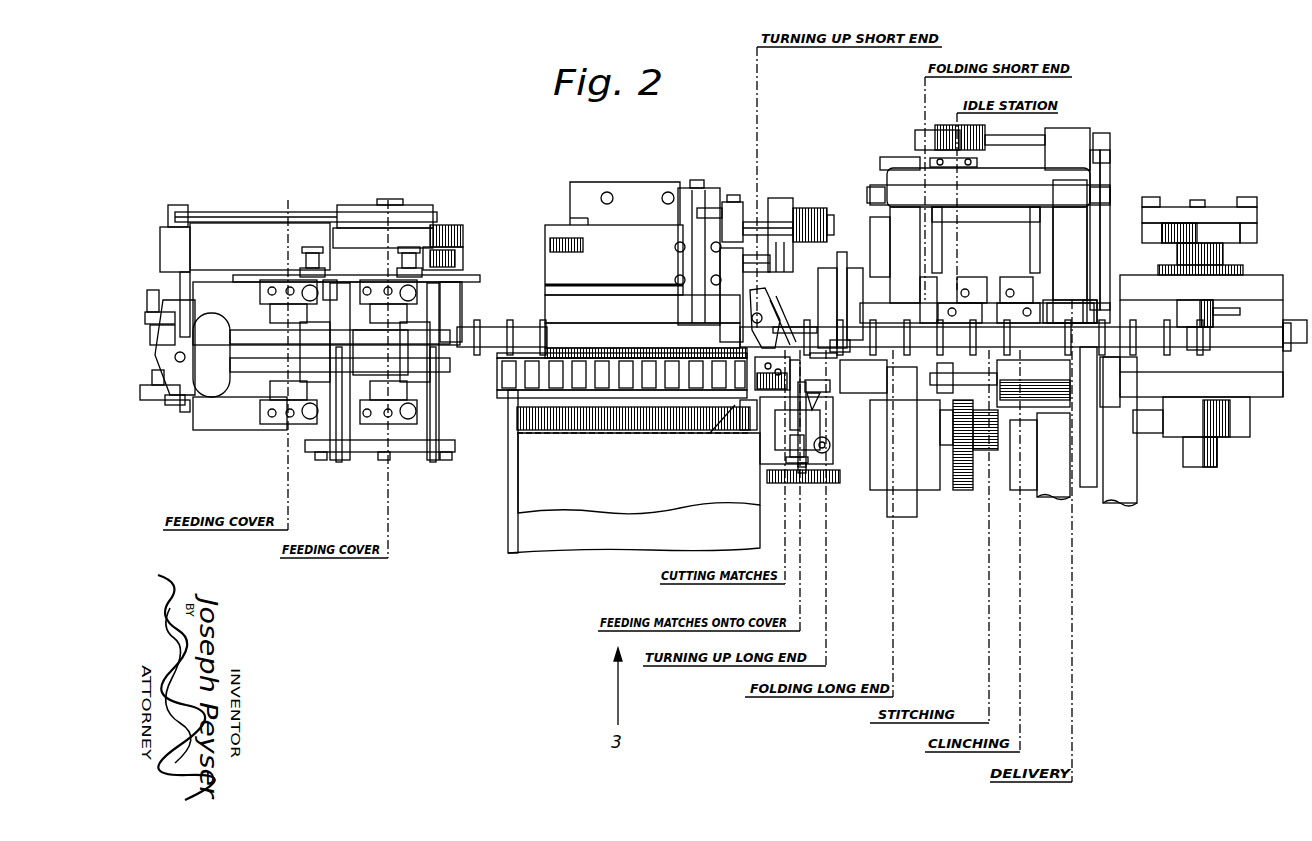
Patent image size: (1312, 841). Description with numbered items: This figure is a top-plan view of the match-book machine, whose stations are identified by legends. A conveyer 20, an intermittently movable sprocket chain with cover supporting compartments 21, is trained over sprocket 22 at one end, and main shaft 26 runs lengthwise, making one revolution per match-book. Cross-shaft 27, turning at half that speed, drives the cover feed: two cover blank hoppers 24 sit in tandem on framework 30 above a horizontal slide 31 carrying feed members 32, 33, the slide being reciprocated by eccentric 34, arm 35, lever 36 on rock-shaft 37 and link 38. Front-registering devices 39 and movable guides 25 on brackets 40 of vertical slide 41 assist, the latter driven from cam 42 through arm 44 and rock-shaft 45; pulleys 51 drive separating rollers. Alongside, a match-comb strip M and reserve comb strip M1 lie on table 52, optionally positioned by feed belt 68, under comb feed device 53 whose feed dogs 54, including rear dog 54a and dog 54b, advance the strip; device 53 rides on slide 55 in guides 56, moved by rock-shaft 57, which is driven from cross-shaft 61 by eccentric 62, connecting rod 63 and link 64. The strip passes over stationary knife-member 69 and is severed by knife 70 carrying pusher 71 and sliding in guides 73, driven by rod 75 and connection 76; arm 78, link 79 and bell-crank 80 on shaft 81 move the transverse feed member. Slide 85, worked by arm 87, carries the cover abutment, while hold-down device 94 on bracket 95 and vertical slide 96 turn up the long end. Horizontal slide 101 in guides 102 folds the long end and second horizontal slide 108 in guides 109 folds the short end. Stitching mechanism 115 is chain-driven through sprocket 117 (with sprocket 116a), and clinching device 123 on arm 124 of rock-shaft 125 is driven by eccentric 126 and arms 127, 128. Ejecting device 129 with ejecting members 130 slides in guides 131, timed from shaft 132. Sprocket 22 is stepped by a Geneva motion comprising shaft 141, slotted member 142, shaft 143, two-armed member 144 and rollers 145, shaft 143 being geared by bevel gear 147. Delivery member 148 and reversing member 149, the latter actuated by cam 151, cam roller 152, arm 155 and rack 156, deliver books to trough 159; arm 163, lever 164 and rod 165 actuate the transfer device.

The conveyer 20 is at (470, 362).
The cover supporting compartments 21 is at (520, 327).
The sprocket 22 is at (1220, 340).
The cover blank hoppers 24 is at (262, 280).
The movable guides or ejectors 25 is at (298, 356).
The main shaft 26 is at (1290, 320).
The cross-shaft 27 is at (388, 199).
The framework 30 is at (330, 283).
The horizontal slide 31 is at (234, 319).
The feed members 32 is at (244, 357).
The feed members 33 is at (380, 354).
The eccentric 34 is at (342, 210).
The arm 35 is at (220, 212).
The lever 36 is at (145, 312).
The rock-shaft 37 is at (167, 207).
The link 38 is at (155, 345).
The front-registering devices 39 is at (436, 320).
The brackets 40 is at (336, 457).
The vertical slide 41 is at (370, 452).
The cam 42 is at (462, 230).
The arm 44 is at (455, 290).
The rock-shaft 45 is at (442, 225).
The pulleys 51 is at (308, 247).
The table 52 is at (513, 395).
The comb feed device 53 is at (600, 352).
The feed dogs 54 is at (555, 408).
The rear dog 54a is at (530, 398).
The feed dog 54b is at (548, 353).
The slide 55 is at (570, 352).
The guides 56 is at (654, 335).
The rock-shaft 57 is at (697, 180).
The cross-shaft 61 is at (785, 198).
The eccentric 62 is at (813, 208).
The connecting rod 63 is at (745, 222).
The link 64 is at (730, 195).
The feed belt 68 is at (634, 493).
The stationary knife-member 69 is at (787, 325).
The knife 70 is at (812, 364).
The pusher or ejector 71 is at (818, 386).
The guides 73 is at (770, 405).
The rod 75 is at (830, 445).
The connection 76 is at (815, 469).
The arm 78 is at (795, 445).
The link 79 is at (803, 473).
The bell-crank 80 is at (810, 482).
The shaft 81 is at (823, 456).
The slide 85 is at (765, 312).
The arm 87 is at (698, 256).
The hold-down device 94 is at (795, 336).
The bracket 95 is at (842, 253).
The vertical slide 96 is at (835, 340).
The horizontal slide 101 is at (863, 376).
The guides 102 is at (880, 450).
The second horizontal slide 108 is at (932, 273).
The guides 109 is at (875, 220).
The stitching mechanism 115 is at (975, 290).
The gear 116a is at (950, 128).
The sprocket 117 is at (980, 162).
The clinching device 123 is at (1002, 290).
The arm 124 is at (1100, 288).
The rock-shaft 125 is at (1085, 128).
The eccentric 126 is at (915, 136).
The arm 127 is at (1015, 130).
The arm 128 is at (1110, 148).
The ejecting device 129 is at (1078, 275).
The ejecting members 130 is at (1097, 316).
The guides 131 is at (1105, 236).
The shaft 132 is at (985, 450).
The shaft 141 is at (1215, 462).
The slotted member 142 is at (1240, 238).
The shaft 143 is at (1198, 200).
The two-armed member 144 is at (1230, 207).
The rollers 145 is at (1252, 225).
The bevel gear 147 is at (1240, 312).
The delivery member 148 is at (1105, 450).
The reversing member 149 is at (1033, 383).
The cam 151 is at (957, 488).
The cam roller 152 is at (977, 490).
The arm 155 is at (1020, 470).
The rack 156 is at (1020, 440).
The trough 159 is at (1088, 487).
The arm 163 is at (188, 412).
The lever 164 is at (170, 405).
The rod 165 is at (160, 400).
The match-comb strip M is at (720, 420).
The reserve comb strip M1 is at (580, 420).